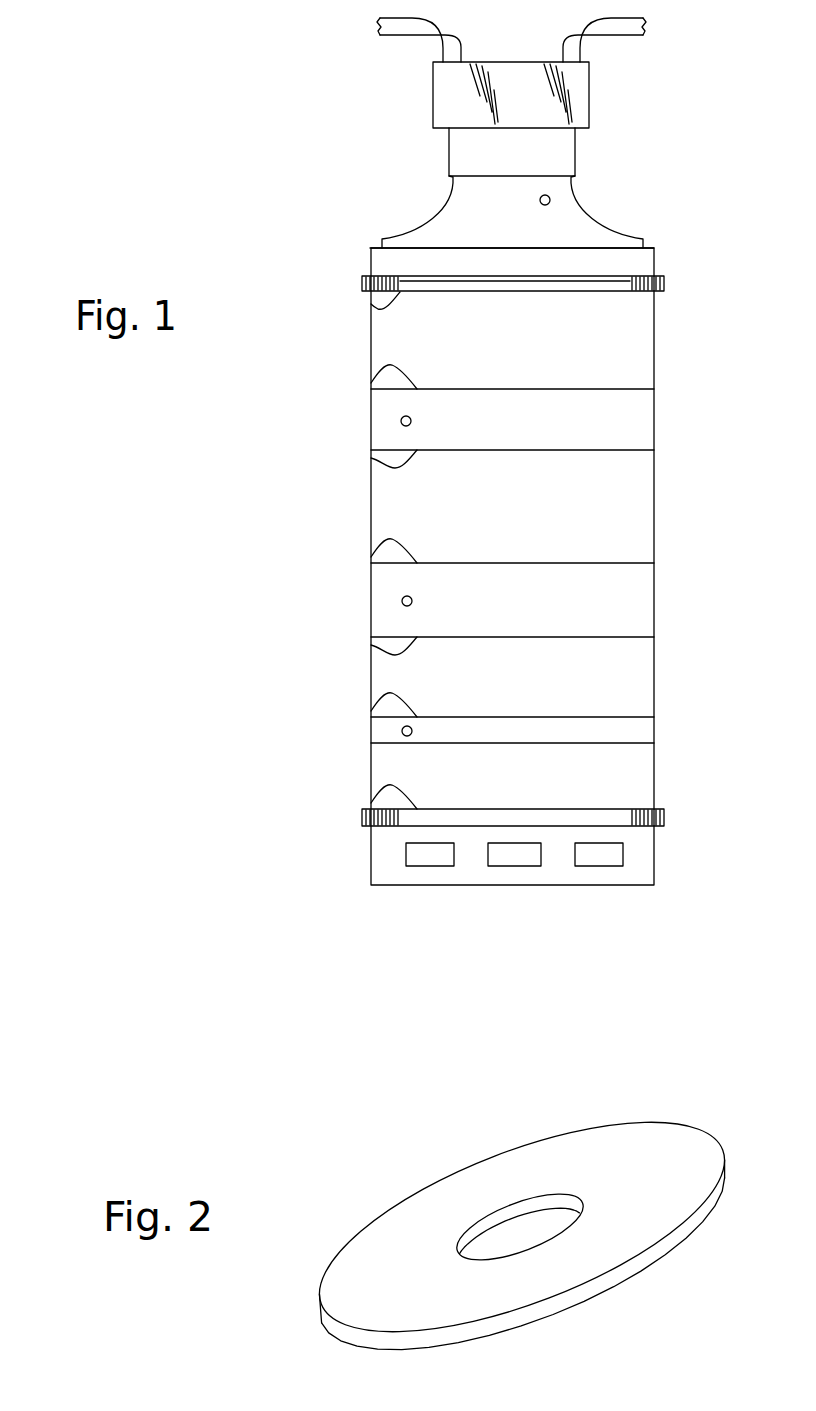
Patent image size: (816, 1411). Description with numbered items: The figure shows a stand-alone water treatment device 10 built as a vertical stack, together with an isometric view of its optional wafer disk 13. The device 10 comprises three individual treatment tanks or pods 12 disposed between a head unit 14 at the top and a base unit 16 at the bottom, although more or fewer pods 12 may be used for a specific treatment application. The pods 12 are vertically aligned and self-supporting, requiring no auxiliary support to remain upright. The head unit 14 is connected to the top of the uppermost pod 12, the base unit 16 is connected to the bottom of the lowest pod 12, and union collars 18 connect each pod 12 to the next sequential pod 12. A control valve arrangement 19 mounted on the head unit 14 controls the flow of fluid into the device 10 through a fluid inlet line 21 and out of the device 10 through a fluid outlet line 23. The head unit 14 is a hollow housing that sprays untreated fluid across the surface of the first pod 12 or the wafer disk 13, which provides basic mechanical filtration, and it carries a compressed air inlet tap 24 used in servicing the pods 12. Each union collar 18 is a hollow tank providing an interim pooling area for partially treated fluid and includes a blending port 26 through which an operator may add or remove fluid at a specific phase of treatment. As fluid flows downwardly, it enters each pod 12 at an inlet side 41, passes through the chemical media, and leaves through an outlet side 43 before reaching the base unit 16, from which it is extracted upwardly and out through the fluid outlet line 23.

In FIG. 1, the water treatment device 10 is at (270, 168).
In FIG. 1, the treatment tank or pod 12 is at (635, 342).
In FIG. 1, the wafer disk 13 is at (665, 280).
In FIG. 2, the wafer disk 13 is at (350, 1152).
In FIG. 1, the head unit 14 is at (590, 230).
In FIG. 1, the base unit 16 is at (645, 861).
In FIG. 1, the union collar 18 is at (635, 423).
In FIG. 1, the control valve arrangement 19 is at (580, 82).
In FIG. 1, the fluid inlet line 21 is at (402, 30).
In FIG. 1, the fluid outlet line 23 is at (615, 25).
In FIG. 1, the compressed air inlet tap 24 is at (548, 197).
In FIG. 1, the blending port 26 is at (401, 421).
In FIG. 1, the inlet side 41 is at (371, 304).
In FIG. 1, the outlet side 43 is at (371, 380).